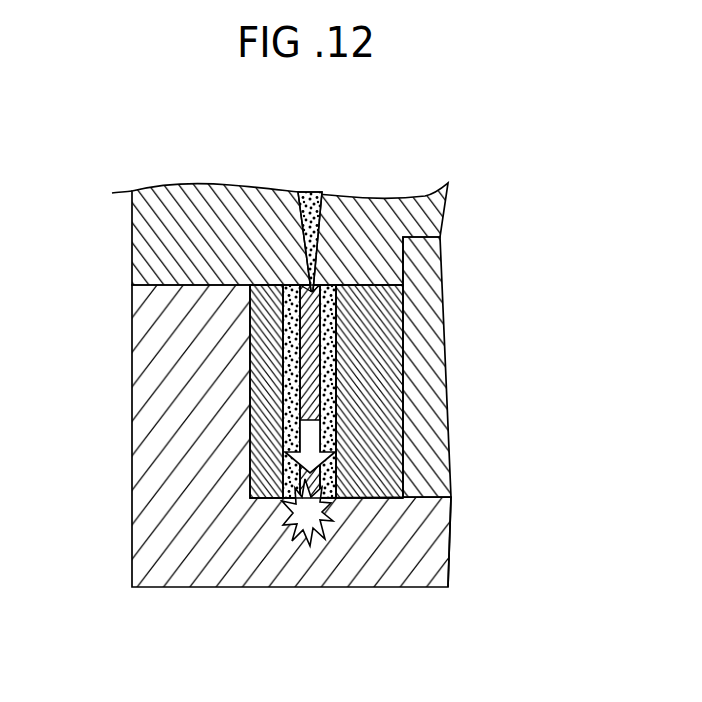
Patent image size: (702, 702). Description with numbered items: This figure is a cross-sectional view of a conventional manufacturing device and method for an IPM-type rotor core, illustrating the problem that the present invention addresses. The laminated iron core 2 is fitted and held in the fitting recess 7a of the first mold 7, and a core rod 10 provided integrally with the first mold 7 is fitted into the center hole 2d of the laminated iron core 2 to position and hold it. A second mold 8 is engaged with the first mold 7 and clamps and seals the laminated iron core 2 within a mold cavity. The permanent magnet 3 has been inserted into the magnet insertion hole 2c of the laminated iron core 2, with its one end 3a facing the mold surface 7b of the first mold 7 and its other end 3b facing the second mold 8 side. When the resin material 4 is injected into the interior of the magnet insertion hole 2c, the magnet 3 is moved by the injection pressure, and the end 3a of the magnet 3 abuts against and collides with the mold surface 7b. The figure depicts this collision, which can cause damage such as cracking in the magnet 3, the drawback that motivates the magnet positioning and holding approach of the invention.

The second mold 8 is at (129, 223).
The first mold 7 is at (129, 516).
The fitting recess 7a is at (372, 473).
The mold surface 7b is at (432, 496).
The resin material 4 is at (298, 285).
The permanent magnet 3 is at (307, 332).
The end of the magnet 3a is at (313, 484).
The other end of the permanent magnet 3b is at (313, 287).
The laminated iron core 2 is at (266, 388).
The magnet insertion hole 2c is at (316, 292).
The center hole 2d is at (430, 343).
The core rod 10 is at (494, 367).